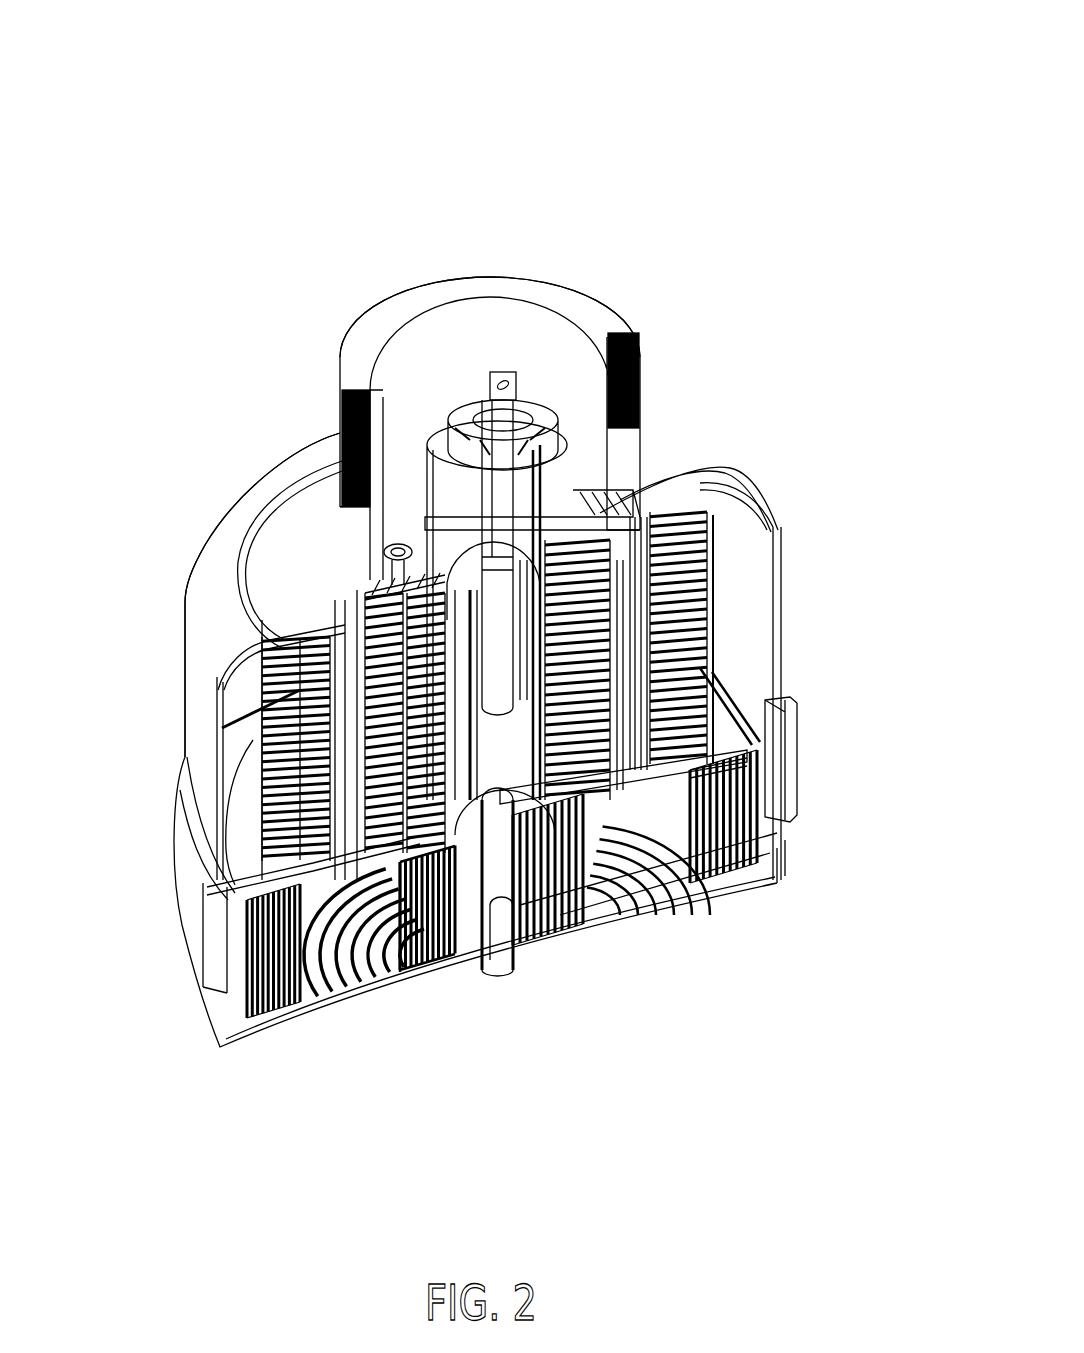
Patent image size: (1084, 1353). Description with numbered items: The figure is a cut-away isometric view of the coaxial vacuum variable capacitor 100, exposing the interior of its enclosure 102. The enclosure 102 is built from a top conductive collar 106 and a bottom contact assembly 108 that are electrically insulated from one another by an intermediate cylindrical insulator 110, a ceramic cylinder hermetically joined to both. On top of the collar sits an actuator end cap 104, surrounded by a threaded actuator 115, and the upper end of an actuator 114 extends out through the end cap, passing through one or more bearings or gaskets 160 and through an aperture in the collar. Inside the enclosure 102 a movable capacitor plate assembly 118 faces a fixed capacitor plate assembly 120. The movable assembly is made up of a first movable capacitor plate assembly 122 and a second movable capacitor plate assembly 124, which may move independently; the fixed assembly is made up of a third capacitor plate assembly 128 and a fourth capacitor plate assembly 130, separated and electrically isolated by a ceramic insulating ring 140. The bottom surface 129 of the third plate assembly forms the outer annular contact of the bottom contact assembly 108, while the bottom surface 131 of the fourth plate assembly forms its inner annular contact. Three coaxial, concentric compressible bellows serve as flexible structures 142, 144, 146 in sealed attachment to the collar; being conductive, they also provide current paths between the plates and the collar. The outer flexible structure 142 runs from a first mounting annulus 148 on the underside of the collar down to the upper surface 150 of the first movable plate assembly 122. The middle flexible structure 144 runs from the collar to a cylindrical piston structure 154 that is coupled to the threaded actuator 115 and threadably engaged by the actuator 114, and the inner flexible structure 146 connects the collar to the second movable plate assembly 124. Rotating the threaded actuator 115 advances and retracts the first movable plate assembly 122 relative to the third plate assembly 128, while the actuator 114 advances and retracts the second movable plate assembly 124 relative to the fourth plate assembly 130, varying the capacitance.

The coaxial variable capacitor 100 is at (778, 62).
The enclosure 102 is at (148, 460).
The actuator end cap 104 is at (528, 405).
The top conductive collar 106 is at (781, 572).
The bottom contact assembly 108 is at (782, 848).
The intermediate cylindrical insulator 110 is at (792, 745).
The actuator 114 is at (492, 375).
The threaded actuator 115 is at (636, 366).
The movable capacitor plate assembly 118 is at (752, 742).
The fixed capacitor plate assembly 120 is at (748, 890).
The first movable capacitor plate assembly 122 is at (745, 758).
The second movable capacitor plate assembly 124 is at (580, 826).
The third capacitor plate assembly 128 is at (717, 890).
The bottom surface 129 is at (258, 1040).
The fourth capacitor plate assembly 130 is at (403, 940).
The bottom surface 131 is at (553, 960).
The insulating ring 140 is at (377, 1007).
The flexible structure 142 is at (705, 537).
The flexible structure 144 is at (607, 552).
The flexible structure 146 is at (575, 615).
The first mounting annulus 148 is at (320, 615).
The upper surface 150 is at (722, 735).
The cylindrical piston structure 154 is at (641, 490).
The bearings or gaskets 160 is at (458, 425).